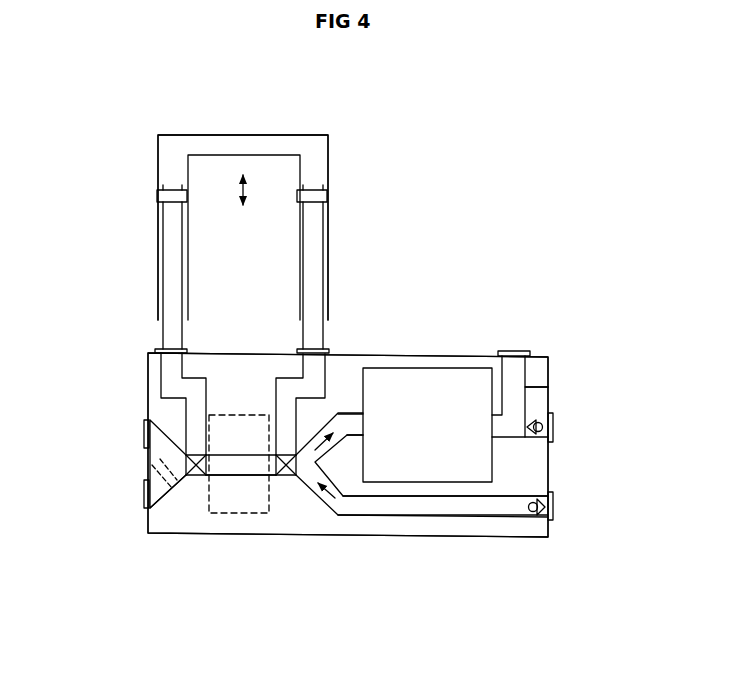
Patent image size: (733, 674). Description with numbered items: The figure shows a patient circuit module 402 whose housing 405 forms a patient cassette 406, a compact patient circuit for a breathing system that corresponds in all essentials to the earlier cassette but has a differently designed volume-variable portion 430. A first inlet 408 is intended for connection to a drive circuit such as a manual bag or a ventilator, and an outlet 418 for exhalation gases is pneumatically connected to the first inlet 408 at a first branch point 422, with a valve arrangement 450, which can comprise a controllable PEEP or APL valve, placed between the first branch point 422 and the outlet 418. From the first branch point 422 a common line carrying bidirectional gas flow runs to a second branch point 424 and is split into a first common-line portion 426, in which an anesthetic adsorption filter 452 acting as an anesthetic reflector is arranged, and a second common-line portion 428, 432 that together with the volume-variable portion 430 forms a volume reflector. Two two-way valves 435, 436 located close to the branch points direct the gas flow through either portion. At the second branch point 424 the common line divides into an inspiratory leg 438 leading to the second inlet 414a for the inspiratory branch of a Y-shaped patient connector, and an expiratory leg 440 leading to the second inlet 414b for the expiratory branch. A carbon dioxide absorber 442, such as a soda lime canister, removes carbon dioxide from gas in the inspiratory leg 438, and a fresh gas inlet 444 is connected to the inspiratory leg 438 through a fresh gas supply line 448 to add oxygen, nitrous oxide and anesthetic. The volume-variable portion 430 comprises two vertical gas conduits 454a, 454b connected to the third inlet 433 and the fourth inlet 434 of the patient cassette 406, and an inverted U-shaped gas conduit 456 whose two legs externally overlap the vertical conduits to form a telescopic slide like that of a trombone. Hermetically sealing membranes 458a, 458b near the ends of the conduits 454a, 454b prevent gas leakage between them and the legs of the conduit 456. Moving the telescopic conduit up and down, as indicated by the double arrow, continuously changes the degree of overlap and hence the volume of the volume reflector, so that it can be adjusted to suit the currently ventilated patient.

The patient circuit module 402 is at (512, 242).
The housing 405 is at (487, 537).
The patient cassette 406 is at (260, 395).
The first inlet 408 is at (143, 430).
The second inlet 414a is at (553, 432).
The second inlet 414b is at (553, 508).
The outlet 418 is at (145, 488).
The first branch point 422 is at (178, 462).
The second branch point 424 is at (305, 464).
The first common-line portion 426 is at (237, 477).
The second common-line portion 428 is at (160, 388).
The volume-variable portion 430 is at (135, 120).
The second common-line portion 432 is at (322, 370).
The third inlet 433 is at (156, 351).
The fourth inlet 434 is at (328, 351).
The two-way valve 435 is at (193, 478).
The two-way valve 436 is at (285, 478).
The inspiratory leg 438 is at (497, 413).
The expiratory leg 440 is at (410, 518).
The carbon dioxide absorber 442 is at (447, 435).
The fresh gas inlet 444 is at (517, 351).
The fresh gas supply line 448 is at (548, 387).
The valve arrangement 450 is at (178, 488).
The anesthetic adsorption filter 452 is at (220, 517).
The vertical gas conduit 454a is at (158, 272).
The vertical gas conduit 454b is at (327, 273).
The U-shaped gas conduit 456 is at (330, 158).
The hermetically sealing membrane 458a is at (157, 194).
The hermetically sealing membrane 458b is at (330, 197).